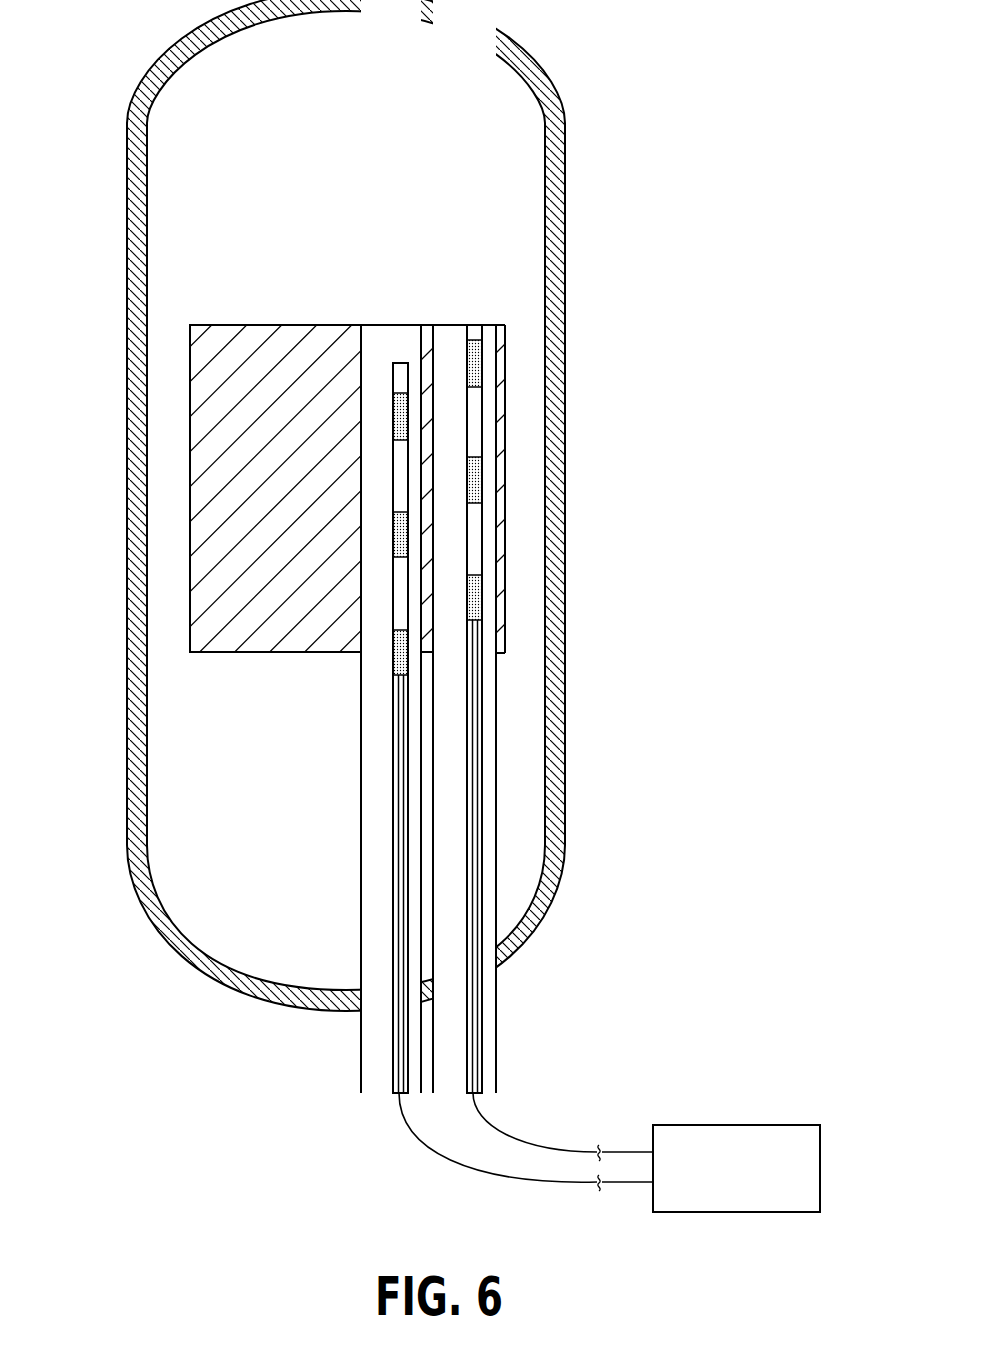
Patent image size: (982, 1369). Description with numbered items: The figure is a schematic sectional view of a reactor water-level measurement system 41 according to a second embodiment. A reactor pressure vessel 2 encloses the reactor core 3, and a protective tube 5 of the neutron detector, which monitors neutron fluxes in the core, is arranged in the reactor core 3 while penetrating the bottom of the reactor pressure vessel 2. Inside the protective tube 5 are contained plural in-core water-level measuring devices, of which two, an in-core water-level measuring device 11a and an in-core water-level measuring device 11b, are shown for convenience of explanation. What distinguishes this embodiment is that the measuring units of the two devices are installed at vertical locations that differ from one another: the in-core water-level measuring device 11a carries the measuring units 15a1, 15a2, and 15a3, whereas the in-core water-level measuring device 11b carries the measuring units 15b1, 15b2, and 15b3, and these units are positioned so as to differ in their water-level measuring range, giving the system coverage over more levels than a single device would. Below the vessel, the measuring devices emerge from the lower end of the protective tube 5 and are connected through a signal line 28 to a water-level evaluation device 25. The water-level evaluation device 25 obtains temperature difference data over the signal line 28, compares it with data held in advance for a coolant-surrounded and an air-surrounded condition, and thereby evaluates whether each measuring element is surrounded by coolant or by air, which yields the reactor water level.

The reactor pressure vessel 2 is at (127, 163).
The reactor core 3 is at (190, 378).
The protective tube 5 is at (497, 895).
The in-core water-level measuring device 11a is at (423, 814).
The in-core water-level measuring device 11b is at (497, 759).
The measuring unit 15a1 is at (409, 421).
The measuring unit 15a2 is at (409, 540).
The measuring unit 15a3 is at (409, 660).
The measuring unit 15b1 is at (483, 363).
The measuring unit 15b2 is at (483, 482).
The measuring unit 15b3 is at (483, 600).
The water-level evaluation device 25 is at (770, 1125).
The signal line 28 is at (570, 1152).
The reactor water-level measurement system 41 is at (529, 1035).